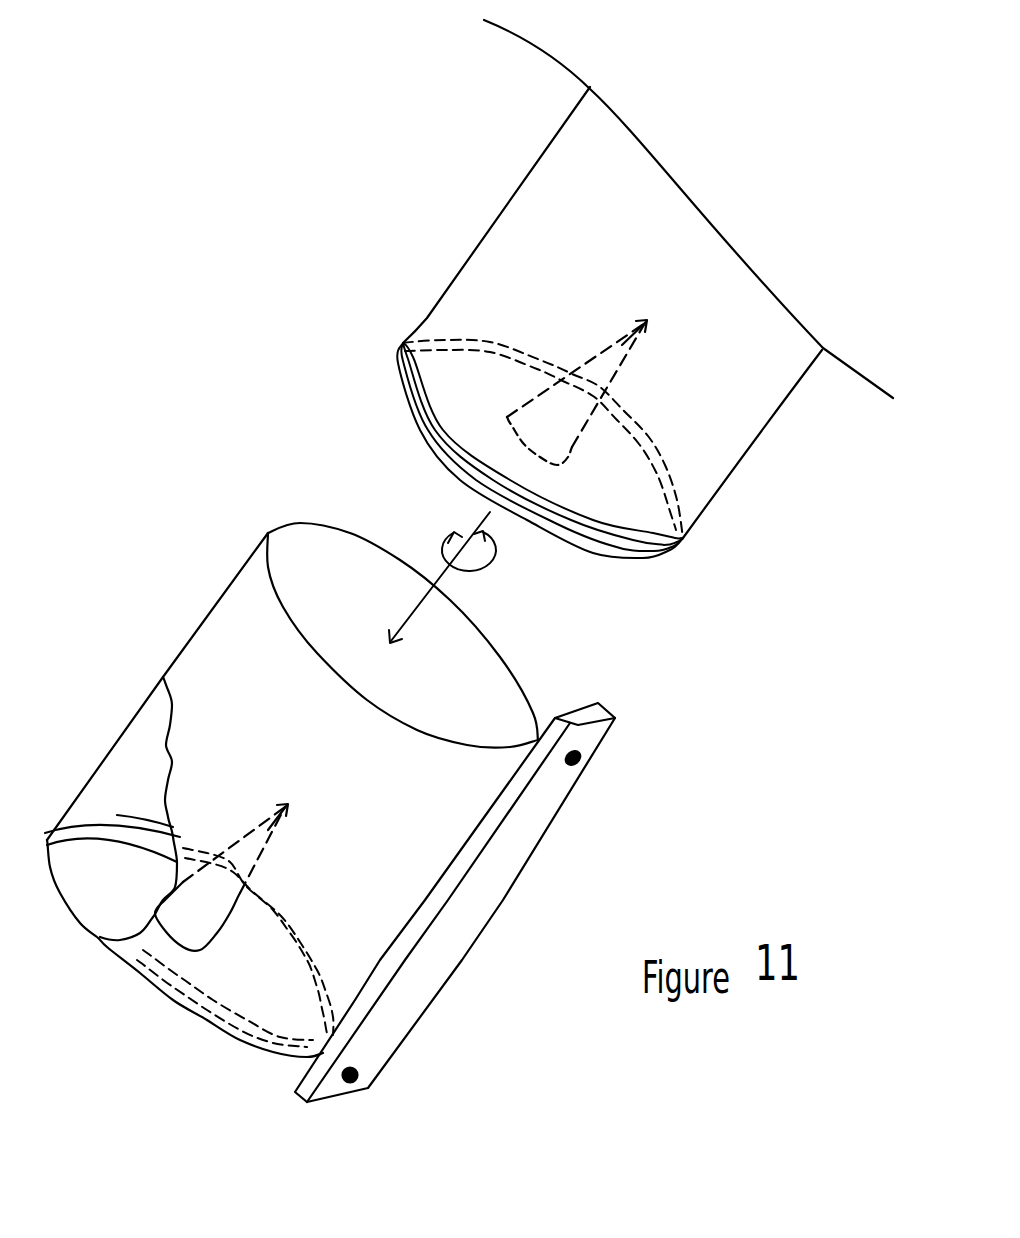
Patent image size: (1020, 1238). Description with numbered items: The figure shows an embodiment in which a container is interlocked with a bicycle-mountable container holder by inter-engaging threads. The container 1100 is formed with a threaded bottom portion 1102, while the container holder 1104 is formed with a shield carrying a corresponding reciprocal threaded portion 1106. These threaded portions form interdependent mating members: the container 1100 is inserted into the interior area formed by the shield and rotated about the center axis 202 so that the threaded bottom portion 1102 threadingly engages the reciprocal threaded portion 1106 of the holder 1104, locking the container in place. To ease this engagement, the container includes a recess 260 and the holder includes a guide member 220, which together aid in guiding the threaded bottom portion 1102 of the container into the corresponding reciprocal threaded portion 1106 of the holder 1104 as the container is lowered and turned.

The container 1100 is at (460, 228).
The threaded bottom portion 1102 is at (401, 341).
The recess 260 is at (640, 362).
The container holder 1104 is at (122, 590).
The reciprocal threaded portion 1106 is at (98, 810).
The guide member 220 is at (283, 841).
The center axis 202 is at (128, 997).